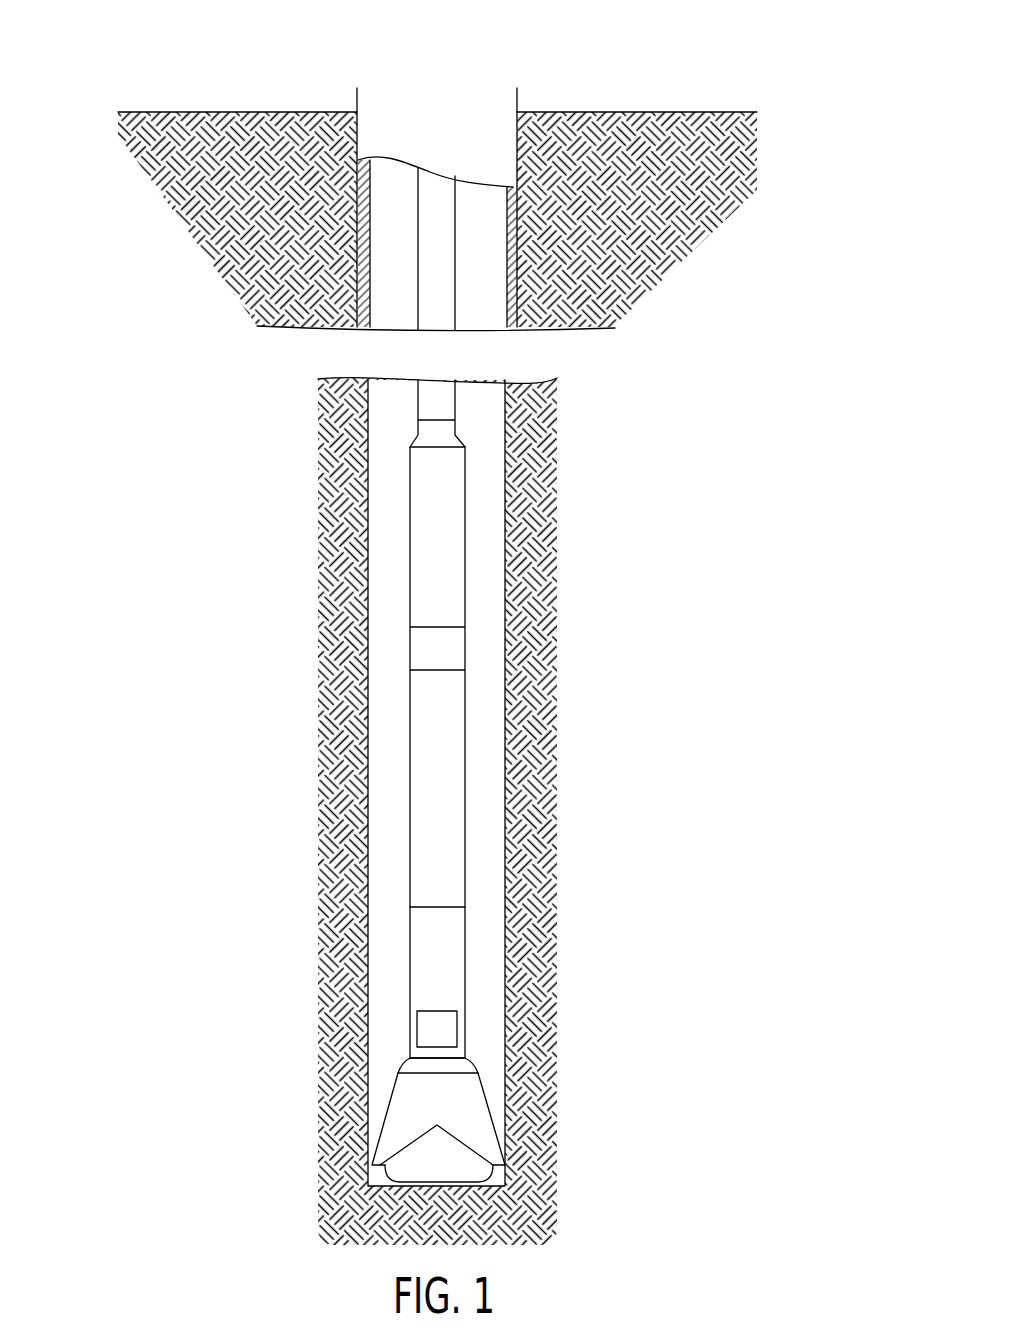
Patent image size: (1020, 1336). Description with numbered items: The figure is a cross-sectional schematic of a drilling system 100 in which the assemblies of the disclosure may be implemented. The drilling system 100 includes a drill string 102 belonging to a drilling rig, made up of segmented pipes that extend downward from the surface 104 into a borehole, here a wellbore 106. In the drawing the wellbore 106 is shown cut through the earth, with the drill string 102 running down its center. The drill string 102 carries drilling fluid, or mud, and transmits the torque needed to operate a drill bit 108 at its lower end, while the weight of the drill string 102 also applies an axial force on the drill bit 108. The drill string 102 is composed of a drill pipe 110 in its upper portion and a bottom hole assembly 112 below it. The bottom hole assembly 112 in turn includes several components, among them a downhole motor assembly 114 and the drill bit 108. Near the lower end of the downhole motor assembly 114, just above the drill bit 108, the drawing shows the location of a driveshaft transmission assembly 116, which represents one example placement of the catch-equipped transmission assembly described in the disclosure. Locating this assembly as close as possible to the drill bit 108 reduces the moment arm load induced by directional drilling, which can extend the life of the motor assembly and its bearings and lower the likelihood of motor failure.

The drilling system 100 is at (163, 352).
The drill string 102 is at (457, 297).
The surface 104 is at (687, 137).
The wellbore 106 is at (485, 127).
The drill bit 108 is at (490, 1120).
The drill pipe 110 is at (455, 427).
The bottom hole assembly 112 is at (465, 740).
The downhole motor assembly 114 is at (443, 996).
The driveshaft transmission assembly 116 is at (417, 1030).